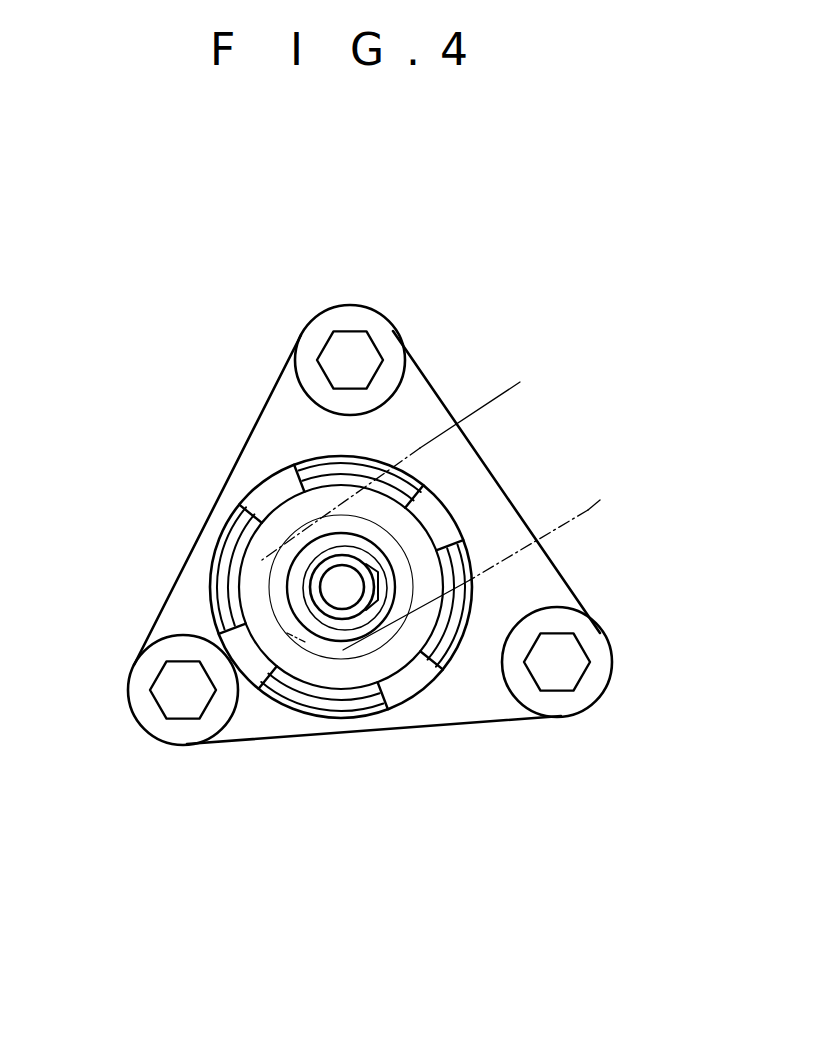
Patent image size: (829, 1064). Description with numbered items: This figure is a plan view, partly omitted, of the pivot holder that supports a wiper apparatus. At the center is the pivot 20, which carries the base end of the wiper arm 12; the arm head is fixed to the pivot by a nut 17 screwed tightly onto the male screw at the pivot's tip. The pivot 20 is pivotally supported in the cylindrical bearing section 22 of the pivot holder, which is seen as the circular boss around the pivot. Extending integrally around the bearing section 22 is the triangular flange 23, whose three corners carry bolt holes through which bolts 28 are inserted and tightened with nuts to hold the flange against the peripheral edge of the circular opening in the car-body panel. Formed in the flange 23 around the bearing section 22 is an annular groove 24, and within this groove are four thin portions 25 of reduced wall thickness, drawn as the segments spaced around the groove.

The wiper arm 12 is at (588, 510).
The nut 17 is at (338, 620).
The pivot 20 is at (330, 589).
The cylindrical bearing section 22 is at (290, 565).
The triangular flange 23 is at (407, 727).
The annular groove 24 is at (362, 465).
The thin portions 25 is at (268, 502).
The bolts 28 is at (346, 352).